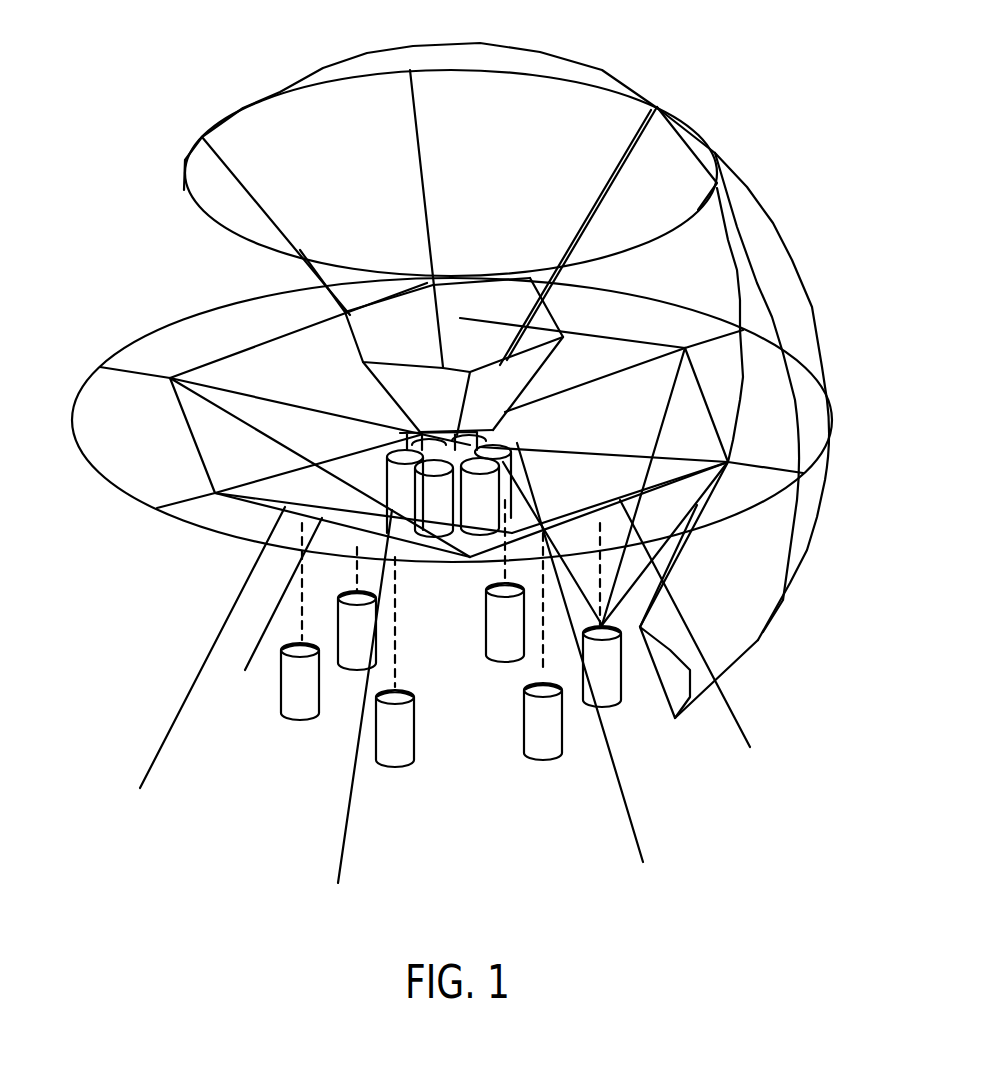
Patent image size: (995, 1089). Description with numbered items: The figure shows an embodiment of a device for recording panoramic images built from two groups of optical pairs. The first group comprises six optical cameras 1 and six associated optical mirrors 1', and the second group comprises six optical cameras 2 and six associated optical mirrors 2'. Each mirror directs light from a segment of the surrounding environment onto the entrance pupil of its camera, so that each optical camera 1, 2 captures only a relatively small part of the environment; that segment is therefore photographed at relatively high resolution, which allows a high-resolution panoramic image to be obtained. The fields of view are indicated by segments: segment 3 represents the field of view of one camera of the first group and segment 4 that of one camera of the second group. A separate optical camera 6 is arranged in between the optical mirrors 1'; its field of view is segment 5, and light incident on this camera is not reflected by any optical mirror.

The optical cameras 1 is at (439, 529).
The optical mirrors 1' is at (462, 296).
The optical cameras 2 is at (427, 693).
The optical mirrors 2' is at (467, 567).
The segment 3 is at (770, 277).
The segment 4 is at (747, 567).
The segment 5 is at (530, 127).
The optical camera 6 is at (447, 443).